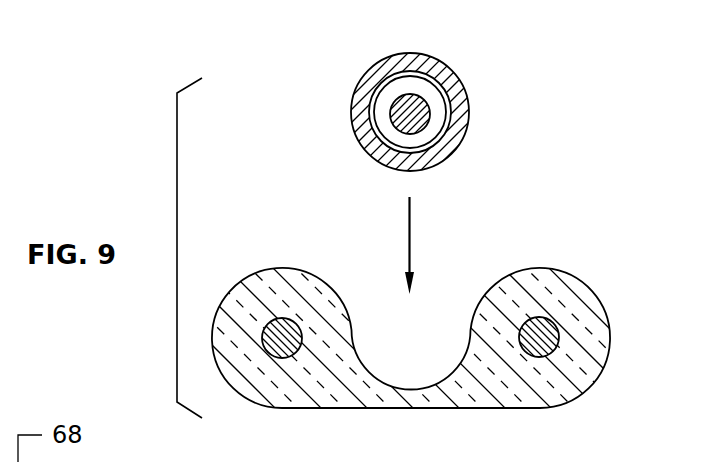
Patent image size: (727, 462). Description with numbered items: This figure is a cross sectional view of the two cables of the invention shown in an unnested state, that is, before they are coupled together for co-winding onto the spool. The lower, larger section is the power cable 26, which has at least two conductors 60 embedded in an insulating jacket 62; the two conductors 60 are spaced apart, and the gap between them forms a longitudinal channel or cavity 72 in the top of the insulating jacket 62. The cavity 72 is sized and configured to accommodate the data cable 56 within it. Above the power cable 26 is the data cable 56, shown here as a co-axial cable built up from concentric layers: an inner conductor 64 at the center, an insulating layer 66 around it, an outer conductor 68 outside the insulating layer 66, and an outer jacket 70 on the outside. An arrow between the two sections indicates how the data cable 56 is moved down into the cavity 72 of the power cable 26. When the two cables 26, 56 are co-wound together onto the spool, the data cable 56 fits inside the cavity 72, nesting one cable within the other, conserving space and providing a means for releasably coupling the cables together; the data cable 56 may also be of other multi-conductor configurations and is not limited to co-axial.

The power cable 26 is at (517, 390).
The data cable 56 is at (445, 97).
The conductors 60 is at (286, 345).
The insulating jacket 62 is at (572, 388).
The inner conductor 64 is at (400, 118).
The insulating layer 66 is at (376, 90).
The outer conductor 68 is at (378, 128).
The outer jacket 70 is at (458, 133).
The cavity 72 is at (363, 360).